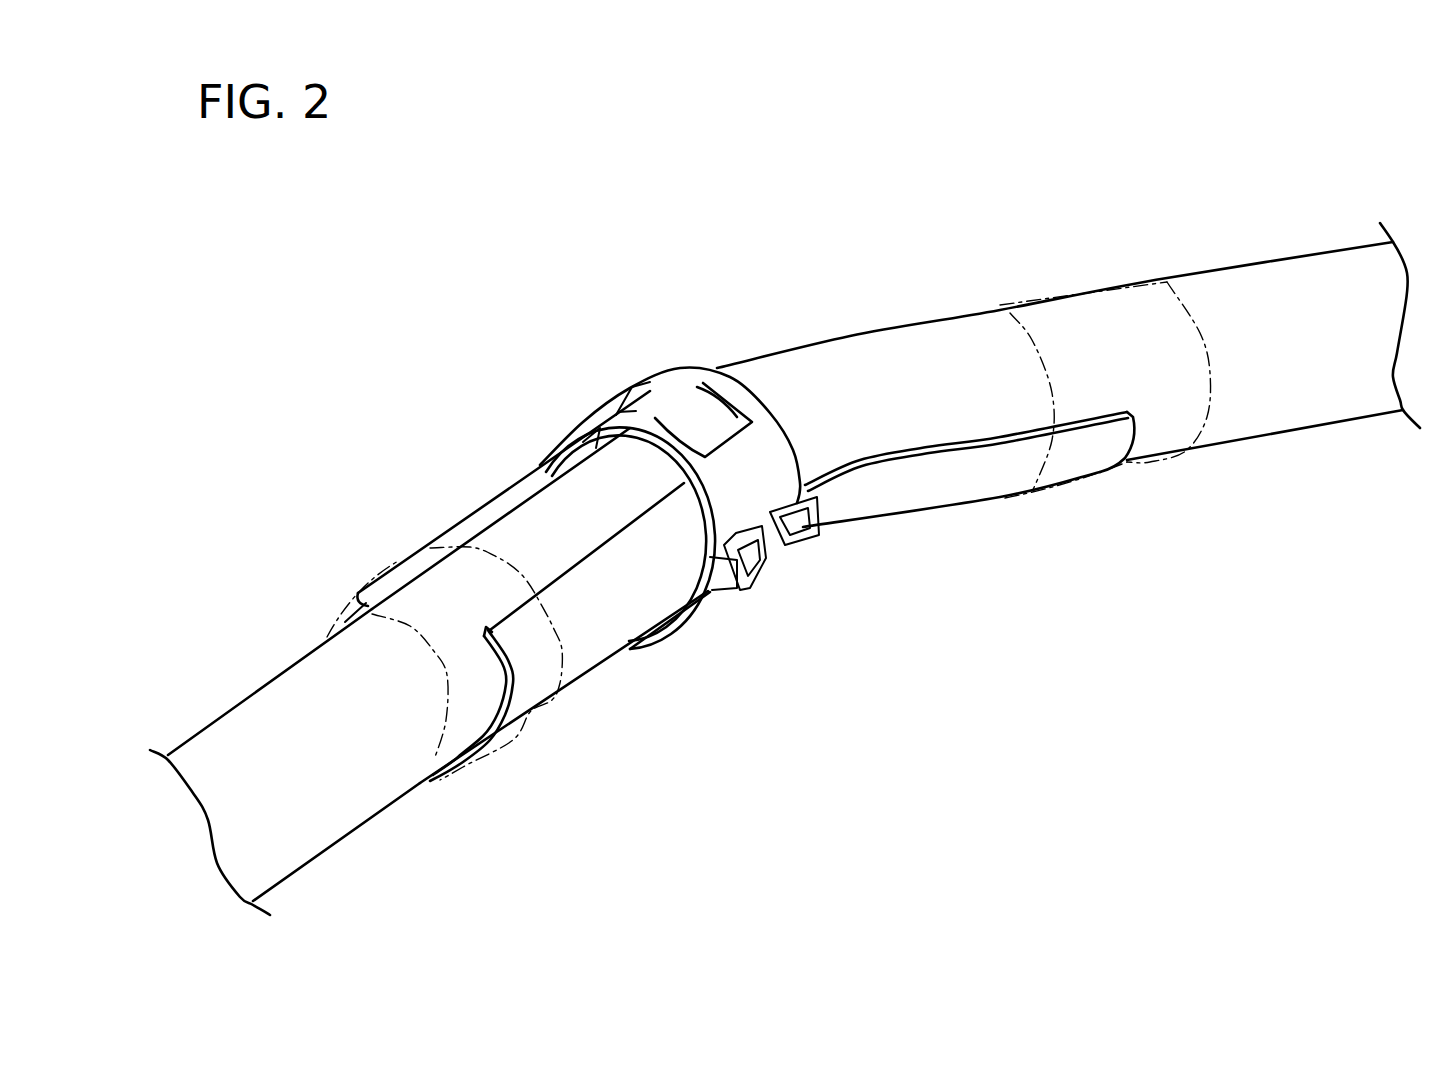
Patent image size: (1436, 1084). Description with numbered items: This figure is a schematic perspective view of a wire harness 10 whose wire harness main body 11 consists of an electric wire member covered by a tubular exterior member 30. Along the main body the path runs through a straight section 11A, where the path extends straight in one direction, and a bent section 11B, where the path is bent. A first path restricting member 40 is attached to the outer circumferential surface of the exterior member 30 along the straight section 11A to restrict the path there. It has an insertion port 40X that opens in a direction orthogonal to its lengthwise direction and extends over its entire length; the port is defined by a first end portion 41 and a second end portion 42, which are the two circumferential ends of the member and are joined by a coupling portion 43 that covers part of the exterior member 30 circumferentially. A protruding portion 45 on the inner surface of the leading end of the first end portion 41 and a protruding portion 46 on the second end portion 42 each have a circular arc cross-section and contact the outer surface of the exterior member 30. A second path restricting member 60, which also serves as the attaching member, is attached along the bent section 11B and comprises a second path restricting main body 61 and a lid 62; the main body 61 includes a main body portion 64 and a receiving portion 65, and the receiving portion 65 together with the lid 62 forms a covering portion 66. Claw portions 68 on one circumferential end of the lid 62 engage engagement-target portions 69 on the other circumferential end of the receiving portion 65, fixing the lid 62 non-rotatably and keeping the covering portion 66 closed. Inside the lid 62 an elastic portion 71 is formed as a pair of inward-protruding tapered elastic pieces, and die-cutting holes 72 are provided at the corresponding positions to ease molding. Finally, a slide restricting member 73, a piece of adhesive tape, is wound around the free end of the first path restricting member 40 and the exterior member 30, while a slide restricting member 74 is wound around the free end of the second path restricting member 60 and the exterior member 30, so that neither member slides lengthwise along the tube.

The wire harness 10 is at (1338, 165).
The wire harness main body 11 is at (785, 569).
The straight section 11A is at (510, 527).
The bent section 11B is at (858, 355).
The exterior member 30 is at (268, 683).
The first path restricting member 40 is at (632, 648).
The insertion port 40X is at (575, 557).
The first end portion 41 is at (458, 530).
The second end portion 42 is at (498, 620).
The coupling portion 43 is at (572, 675).
The protruding portion 45 is at (370, 617).
The protruding portion 46 is at (485, 637).
The second path restricting member 60 is at (955, 507).
The second path restricting main body 61 is at (897, 517).
The lid 62 is at (775, 453).
The main body portion 64 is at (920, 467).
The receiving portion 65 is at (720, 598).
The covering portion 66 is at (687, 372).
The claw portions 68 is at (750, 588).
The engagement-target portions 69 is at (775, 562).
The elastic portion 71 is at (735, 415).
The die-cutting holes 72 is at (628, 390).
The slide restricting member 73 is at (385, 557).
The slide restricting member 74 is at (1117, 283).